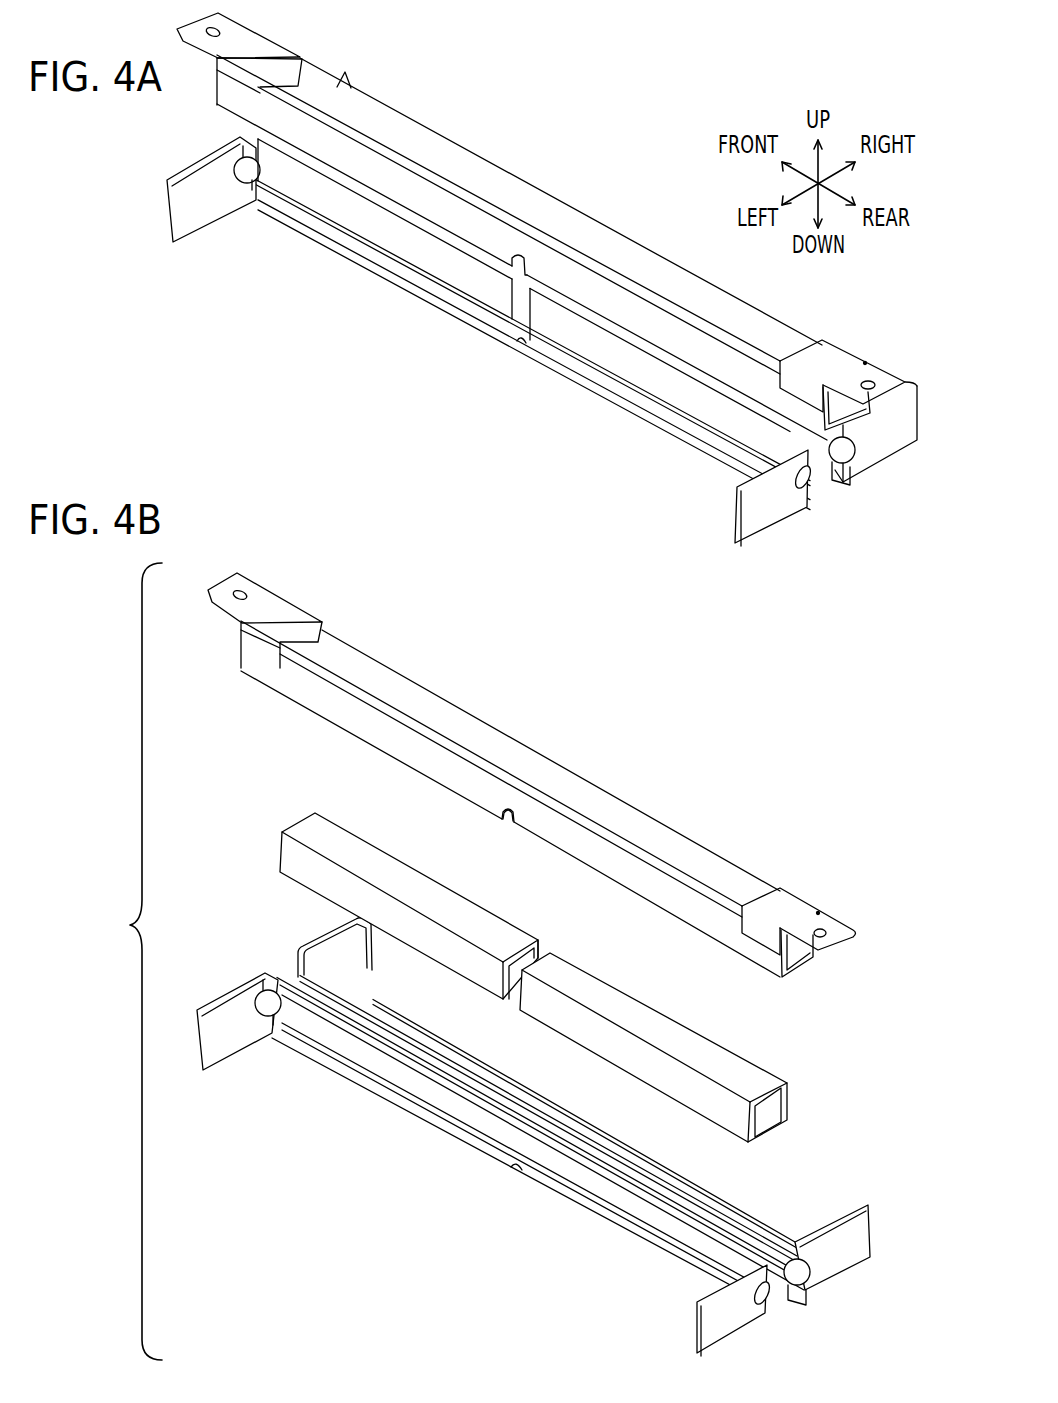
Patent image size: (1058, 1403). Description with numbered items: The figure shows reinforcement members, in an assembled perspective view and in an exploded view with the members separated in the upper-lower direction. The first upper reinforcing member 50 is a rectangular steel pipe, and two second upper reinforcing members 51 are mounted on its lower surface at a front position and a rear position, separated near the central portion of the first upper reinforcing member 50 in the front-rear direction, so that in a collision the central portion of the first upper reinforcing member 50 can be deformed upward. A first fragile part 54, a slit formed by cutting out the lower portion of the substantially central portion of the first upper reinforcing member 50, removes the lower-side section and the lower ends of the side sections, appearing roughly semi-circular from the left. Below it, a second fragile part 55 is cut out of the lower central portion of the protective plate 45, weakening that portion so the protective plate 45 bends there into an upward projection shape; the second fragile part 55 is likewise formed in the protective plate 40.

In FIG. 4A, the protective plate 40 is at (897, 455).
In FIG. 4B, the protective plate 40 is at (860, 1263).
In FIG. 4A, the protective plate 45 is at (777, 525).
In FIG. 4B, the protective plate 45 is at (695, 1330).
In FIG. 4A, the first upper reinforcing member 50 is at (497, 162).
In FIG. 4B, the first upper reinforcing member 50 is at (388, 677).
In FIG. 4A, the second upper reinforcing member 51 is at (322, 200).
In FIG. 4B, the second upper reinforcing member 51 is at (275, 853).
In FIG. 4A, the first fragile part 54 is at (525, 258).
In FIG. 4B, the first fragile part 54 is at (508, 810).
In FIG. 4A, the second fragile part 55 is at (522, 352).
In FIG. 4B, the second fragile part 55 is at (520, 1190).